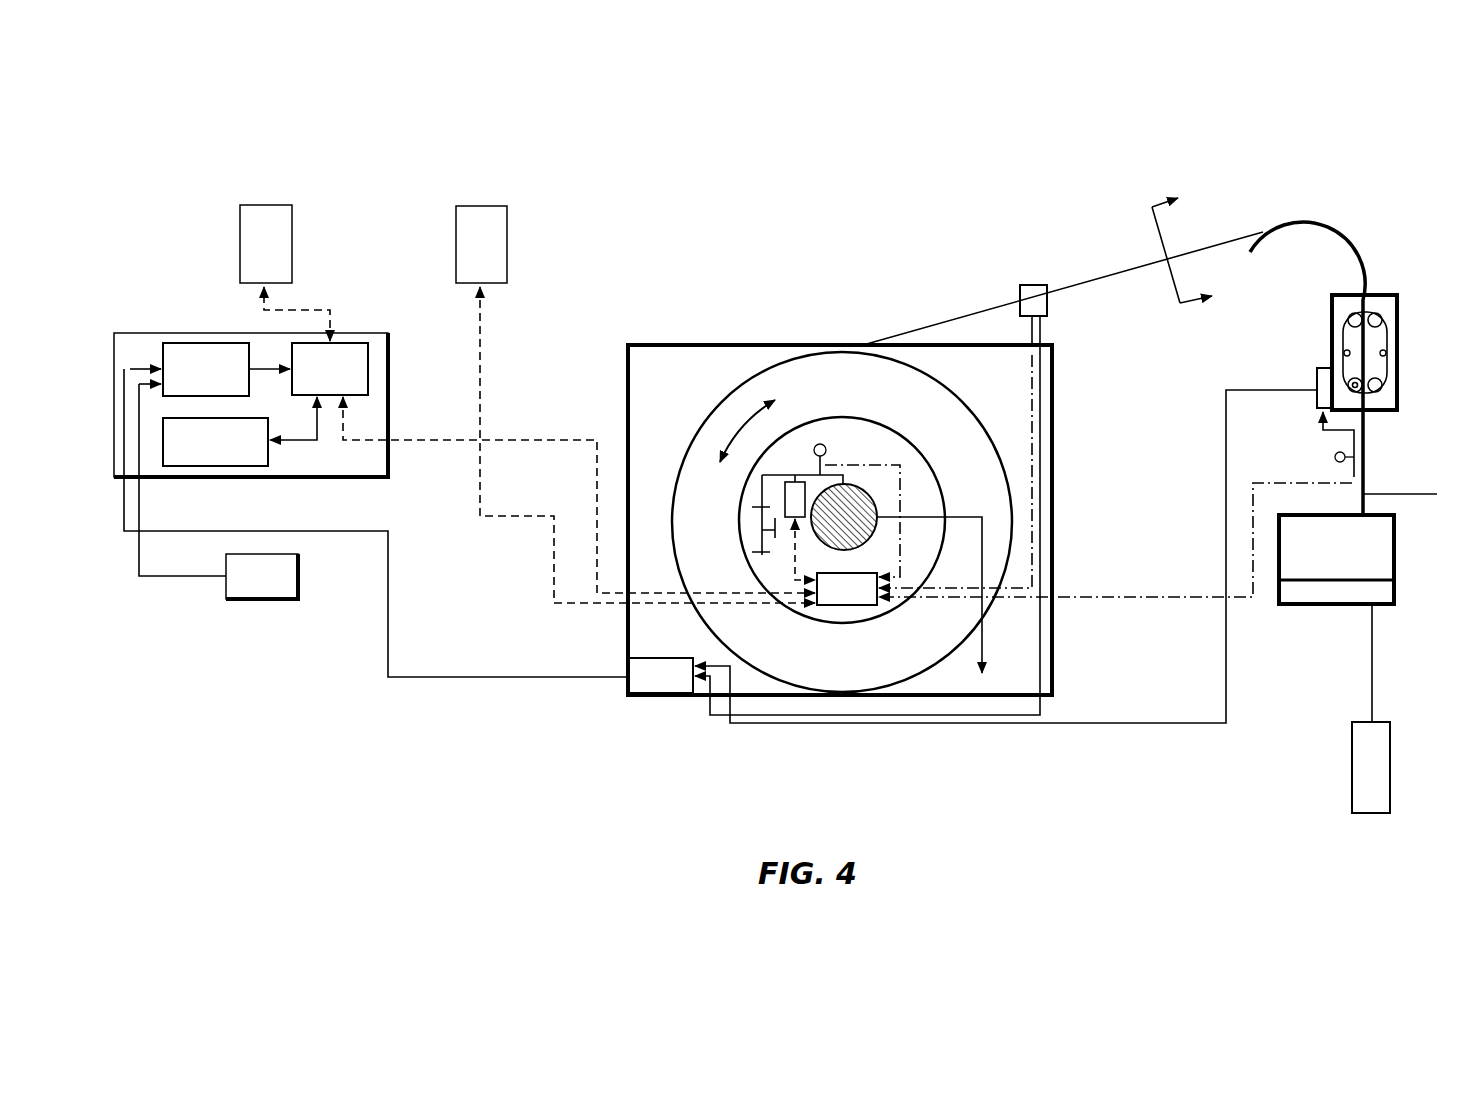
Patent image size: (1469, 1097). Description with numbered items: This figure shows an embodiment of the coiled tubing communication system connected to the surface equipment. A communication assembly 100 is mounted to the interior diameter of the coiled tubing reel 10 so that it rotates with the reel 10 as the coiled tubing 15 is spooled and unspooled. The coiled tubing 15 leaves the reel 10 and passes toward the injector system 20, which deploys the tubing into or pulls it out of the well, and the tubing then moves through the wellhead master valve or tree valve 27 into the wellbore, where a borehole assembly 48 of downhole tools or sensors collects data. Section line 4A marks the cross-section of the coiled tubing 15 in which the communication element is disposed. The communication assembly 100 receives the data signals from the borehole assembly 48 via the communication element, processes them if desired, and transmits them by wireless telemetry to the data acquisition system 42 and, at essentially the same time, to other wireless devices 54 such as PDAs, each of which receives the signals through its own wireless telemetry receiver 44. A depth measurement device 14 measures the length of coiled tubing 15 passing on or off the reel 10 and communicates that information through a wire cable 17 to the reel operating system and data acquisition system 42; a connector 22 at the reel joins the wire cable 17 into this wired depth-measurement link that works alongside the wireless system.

The coiled tubing reel 10 is at (792, 357).
The depth measurement device 14 is at (1030, 285).
The coiled tubing 15 is at (1135, 265).
The wire cable 17 is at (543, 680).
The injector system 20 is at (1345, 240).
The connector 22 is at (657, 698).
The wellhead master valve or tree valve 27 is at (1394, 552).
The data acquisition system 42 is at (167, 333).
The wireless telemetry receiver 44 is at (368, 365).
The borehole assembly 48 is at (1365, 813).
The wireless device 54 is at (292, 232).
The communication assembly 100 is at (877, 607).
The section line 4A- 4A is at (1204, 244).